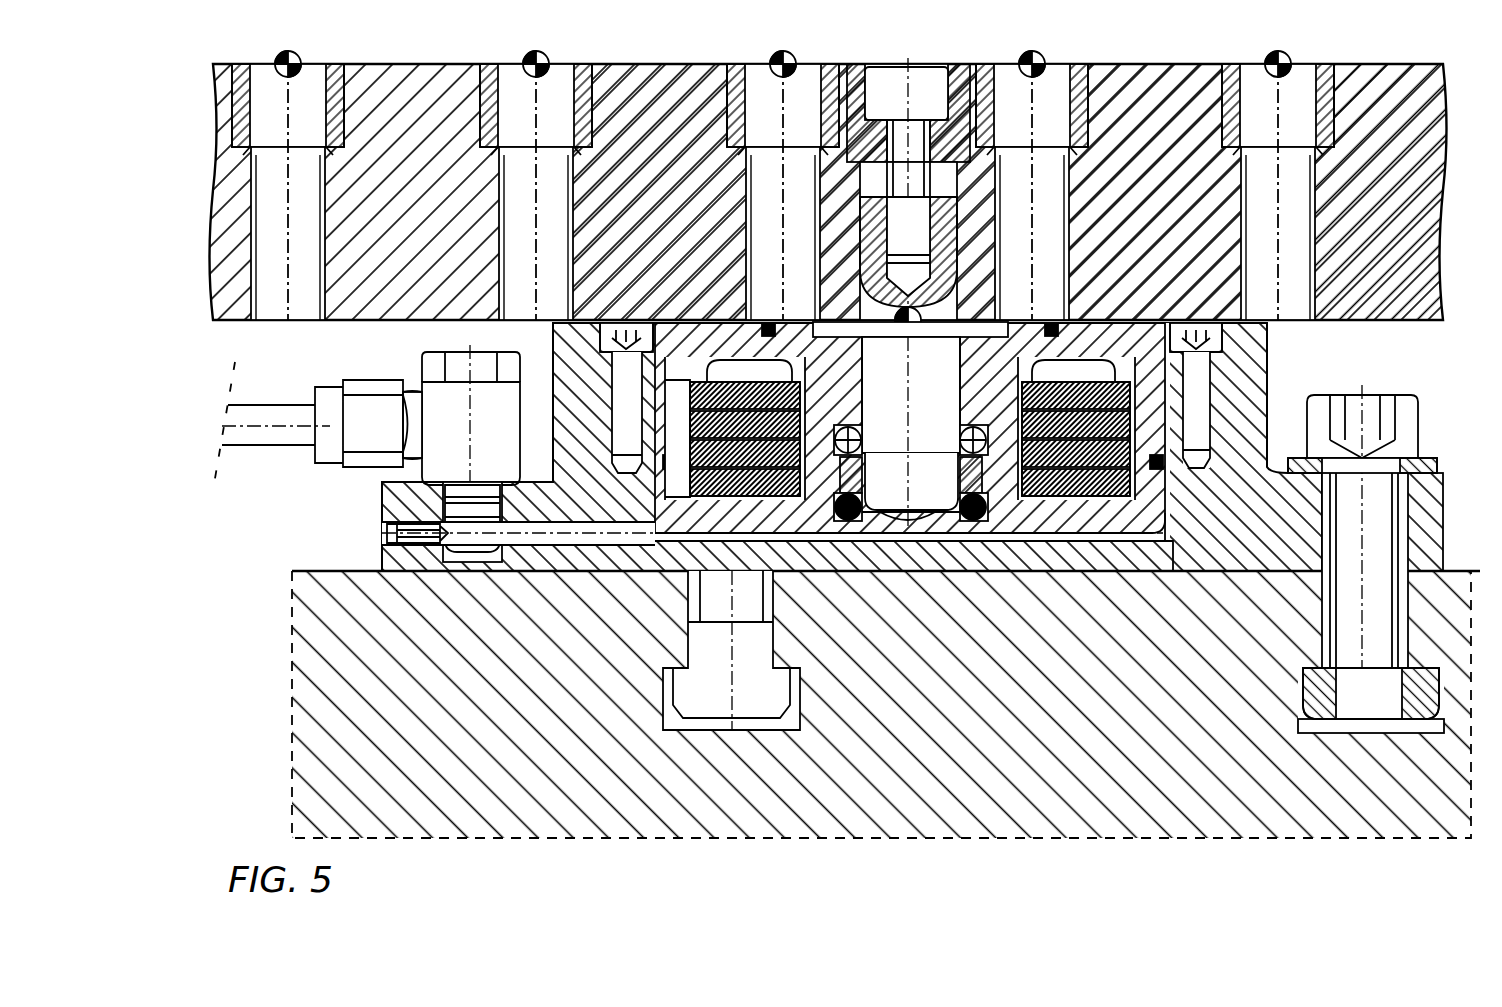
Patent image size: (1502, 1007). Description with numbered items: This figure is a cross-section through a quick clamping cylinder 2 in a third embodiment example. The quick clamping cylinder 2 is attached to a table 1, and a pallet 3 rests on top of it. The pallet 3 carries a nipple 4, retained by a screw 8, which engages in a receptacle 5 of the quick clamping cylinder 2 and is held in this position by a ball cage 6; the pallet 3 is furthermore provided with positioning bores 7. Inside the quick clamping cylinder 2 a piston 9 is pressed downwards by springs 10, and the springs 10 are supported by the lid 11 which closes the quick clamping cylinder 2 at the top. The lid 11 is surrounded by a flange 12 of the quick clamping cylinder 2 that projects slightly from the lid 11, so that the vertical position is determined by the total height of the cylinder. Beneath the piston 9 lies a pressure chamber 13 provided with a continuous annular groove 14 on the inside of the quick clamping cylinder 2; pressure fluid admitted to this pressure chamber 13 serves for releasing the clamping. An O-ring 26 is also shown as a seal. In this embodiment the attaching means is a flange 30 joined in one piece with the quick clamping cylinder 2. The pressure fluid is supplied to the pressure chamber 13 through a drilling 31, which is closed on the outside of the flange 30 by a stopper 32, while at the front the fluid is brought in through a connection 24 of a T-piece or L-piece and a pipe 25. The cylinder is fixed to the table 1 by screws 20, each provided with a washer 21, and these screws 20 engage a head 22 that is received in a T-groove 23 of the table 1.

The table 1 is at (1177, 748).
The quick clamping cylinder 2 is at (1247, 407).
The pallet 3 is at (1183, 130).
The nipple 4 is at (935, 480).
The receptacle 5 is at (953, 508).
The ball cage 6 is at (977, 447).
The positioning bore 7 is at (762, 70).
The screw 8 is at (925, 92).
The piston 9 is at (707, 518).
The spring 10 is at (768, 503).
The lid 11 is at (1220, 377).
The flange 12 is at (570, 353).
The pressure chamber 13 is at (858, 503).
The annular groove 14 is at (660, 540).
The screw 20 is at (1412, 420).
The washer 21 is at (1428, 470).
The head 22 is at (1430, 694).
The T-groove 23 is at (1430, 733).
The T-piece/L-piece connection 24 is at (437, 392).
The supply pipe 25 is at (250, 419).
The O-ring 26 is at (1077, 323).
The flange 30 is at (405, 505).
The drilling 31 is at (557, 527).
The stopper 32 is at (392, 533).